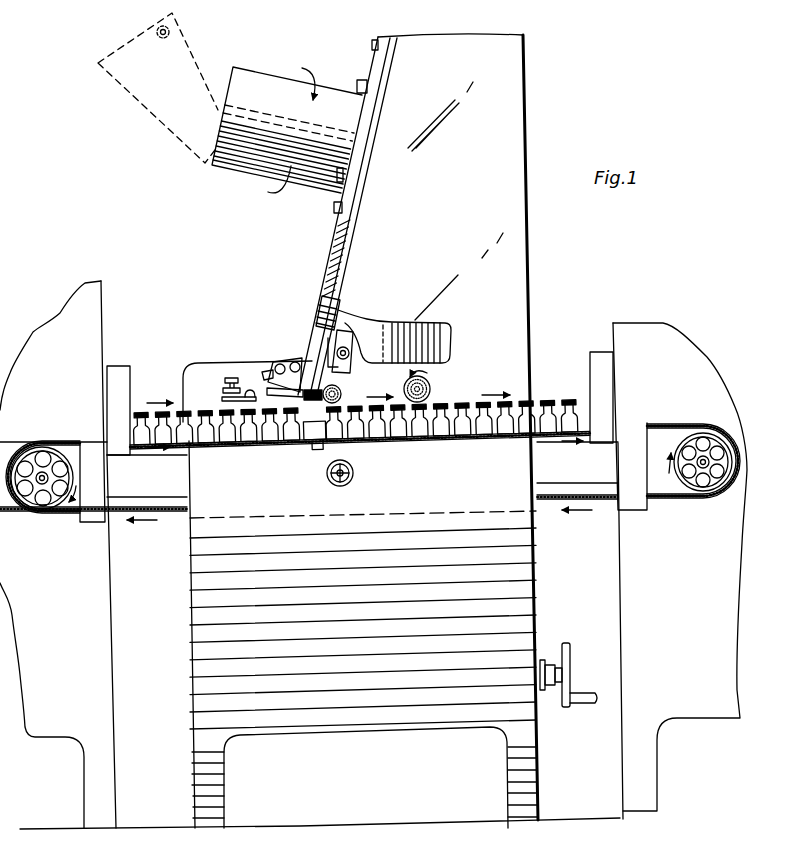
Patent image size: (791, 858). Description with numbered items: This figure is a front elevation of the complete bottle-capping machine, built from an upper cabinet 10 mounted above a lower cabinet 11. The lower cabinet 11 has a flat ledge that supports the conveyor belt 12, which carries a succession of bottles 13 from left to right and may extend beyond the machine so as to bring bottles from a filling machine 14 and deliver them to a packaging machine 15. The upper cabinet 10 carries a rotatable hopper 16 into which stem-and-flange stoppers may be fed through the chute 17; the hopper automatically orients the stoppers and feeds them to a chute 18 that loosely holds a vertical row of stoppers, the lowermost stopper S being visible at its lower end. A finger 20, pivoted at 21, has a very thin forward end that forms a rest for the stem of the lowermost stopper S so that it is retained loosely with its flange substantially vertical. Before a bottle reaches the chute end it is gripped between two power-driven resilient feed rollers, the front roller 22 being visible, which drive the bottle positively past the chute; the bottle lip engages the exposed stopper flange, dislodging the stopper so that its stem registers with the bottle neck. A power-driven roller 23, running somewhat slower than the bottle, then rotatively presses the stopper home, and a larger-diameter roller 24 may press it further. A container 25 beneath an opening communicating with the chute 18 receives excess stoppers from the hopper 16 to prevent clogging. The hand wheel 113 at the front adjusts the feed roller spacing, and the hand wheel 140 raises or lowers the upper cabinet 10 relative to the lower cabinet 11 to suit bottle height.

The upper cabinet 10 is at (527, 355).
The lower cabinet 11 is at (536, 604).
The conveyor belt 12 is at (173, 450).
The bottles 13 is at (143, 413).
The filling machine 14 is at (93, 348).
The packaging machine 15 is at (695, 350).
The rotatable hopper 16 is at (242, 178).
The chute 17 is at (162, 128).
The chute 18 is at (322, 347).
The finger 20 is at (268, 397).
The pivot 21 is at (232, 378).
The front feed roller 22 is at (306, 441).
The power-driven roller 23 is at (341, 393).
The larger-diameter roller 24 is at (443, 383).
The container 25 is at (447, 350).
The hand wheel 113 is at (350, 478).
The hand wheel 140 is at (572, 657).
The lowermost stopper S is at (313, 400).